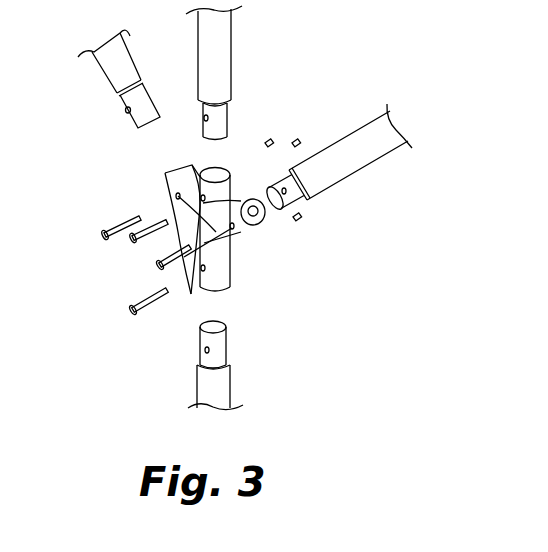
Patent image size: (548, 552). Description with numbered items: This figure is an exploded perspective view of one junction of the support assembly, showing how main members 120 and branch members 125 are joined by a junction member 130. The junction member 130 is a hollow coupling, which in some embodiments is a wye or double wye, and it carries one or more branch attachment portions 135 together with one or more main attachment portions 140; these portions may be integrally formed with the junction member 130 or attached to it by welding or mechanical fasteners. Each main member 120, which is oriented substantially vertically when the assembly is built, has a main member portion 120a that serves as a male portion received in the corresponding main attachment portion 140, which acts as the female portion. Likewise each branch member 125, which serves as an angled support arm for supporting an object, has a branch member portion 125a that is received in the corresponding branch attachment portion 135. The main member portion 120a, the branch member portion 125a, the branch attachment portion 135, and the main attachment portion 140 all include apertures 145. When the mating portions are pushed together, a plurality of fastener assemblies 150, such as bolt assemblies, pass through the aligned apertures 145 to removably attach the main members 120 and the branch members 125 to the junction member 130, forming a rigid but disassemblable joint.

The main member 120 is at (218, 42).
The main member portion 120a is at (222, 112).
The branch member 125 is at (113, 65).
The branch member portion 125a is at (145, 103).
The junction member 130 is at (257, 262).
The branch attachment portion 135 is at (183, 180).
The main attachment portion 140 is at (225, 183).
The aperture 145 is at (334, 214).
The fastener assembly 150 is at (96, 245).